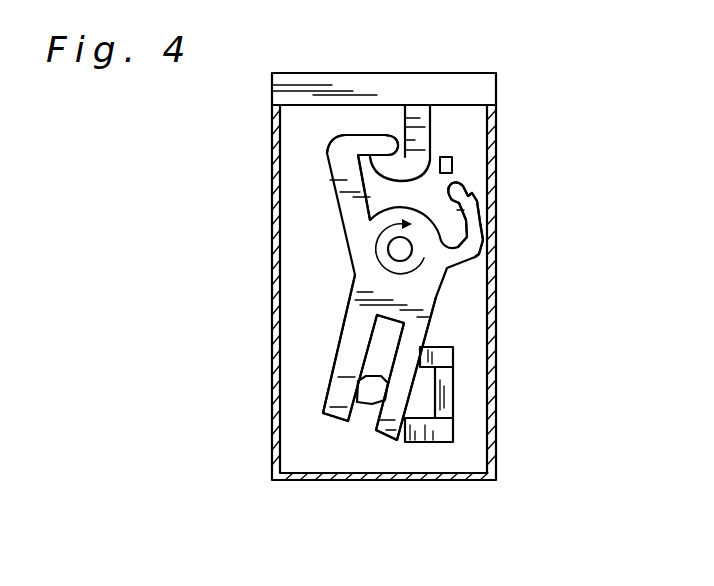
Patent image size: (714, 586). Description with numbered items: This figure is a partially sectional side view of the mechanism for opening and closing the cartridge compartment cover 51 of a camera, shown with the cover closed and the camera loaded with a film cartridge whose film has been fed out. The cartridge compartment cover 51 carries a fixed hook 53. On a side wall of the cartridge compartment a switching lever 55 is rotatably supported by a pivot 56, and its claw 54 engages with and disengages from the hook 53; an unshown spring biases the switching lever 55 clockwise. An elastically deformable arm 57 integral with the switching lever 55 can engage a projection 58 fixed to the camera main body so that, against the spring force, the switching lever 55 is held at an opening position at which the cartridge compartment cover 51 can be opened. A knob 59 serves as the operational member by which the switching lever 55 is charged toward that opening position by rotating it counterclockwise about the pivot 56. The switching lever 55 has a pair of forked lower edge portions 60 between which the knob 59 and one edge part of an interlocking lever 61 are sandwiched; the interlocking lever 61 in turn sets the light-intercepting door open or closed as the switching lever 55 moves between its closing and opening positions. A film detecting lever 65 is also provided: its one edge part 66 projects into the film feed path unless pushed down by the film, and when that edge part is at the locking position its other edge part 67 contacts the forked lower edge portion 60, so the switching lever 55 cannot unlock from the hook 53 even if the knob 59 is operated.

The cartridge compartment cover 51 is at (443, 85).
The hook 53 is at (420, 142).
The claw 54 is at (360, 143).
The switching lever 55 is at (357, 273).
The pivot 56 is at (406, 250).
The elastically deformable arm 57 is at (468, 220).
The projection 58 is at (452, 164).
The knob 59 is at (360, 337).
The forked lower edge portions 60 is at (388, 432).
The interlocking lever 61 is at (388, 380).
The film detecting lever 65 is at (447, 398).
The one edge part 66 is at (450, 347).
The other edge part 67 is at (435, 443).